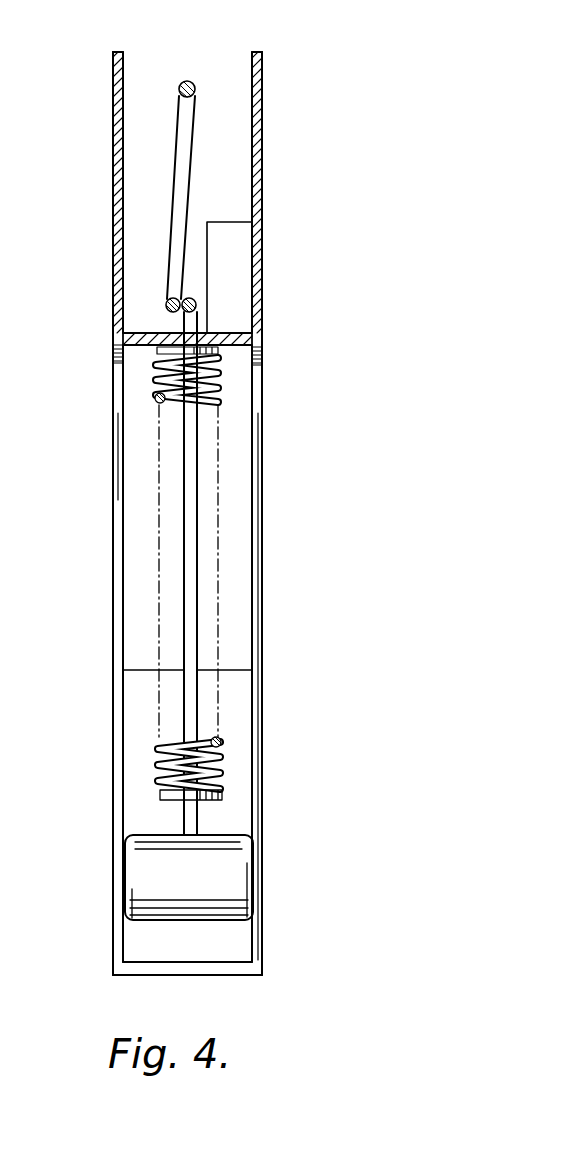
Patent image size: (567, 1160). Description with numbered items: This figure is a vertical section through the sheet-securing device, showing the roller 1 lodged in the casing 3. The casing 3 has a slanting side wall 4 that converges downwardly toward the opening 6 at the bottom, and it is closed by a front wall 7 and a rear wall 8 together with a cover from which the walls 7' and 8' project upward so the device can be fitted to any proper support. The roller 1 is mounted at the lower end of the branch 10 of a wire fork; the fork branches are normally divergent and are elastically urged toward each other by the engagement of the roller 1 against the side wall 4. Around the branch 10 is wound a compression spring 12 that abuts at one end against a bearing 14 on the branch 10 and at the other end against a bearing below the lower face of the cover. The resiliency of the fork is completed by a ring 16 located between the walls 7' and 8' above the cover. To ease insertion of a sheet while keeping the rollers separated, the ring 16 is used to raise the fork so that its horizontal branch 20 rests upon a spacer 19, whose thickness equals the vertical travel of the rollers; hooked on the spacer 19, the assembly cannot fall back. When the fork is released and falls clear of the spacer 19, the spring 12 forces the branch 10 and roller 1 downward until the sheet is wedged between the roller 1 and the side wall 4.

The roller 1 is at (133, 892).
The casing 3 is at (300, 533).
The side wall 4 is at (133, 528).
The opening 6 is at (145, 970).
The front wall 7 is at (89, 654).
The rear wall 8 is at (291, 654).
The projecting wall 7' is at (86, 192).
The projecting wall 8' is at (286, 192).
The fork branch 10 is at (192, 815).
The compression spring 12 is at (221, 742).
The bearing 14 is at (158, 790).
The ring 16 is at (188, 81).
The spacer 19 is at (235, 255).
The horizontal branch 20 is at (196, 305).